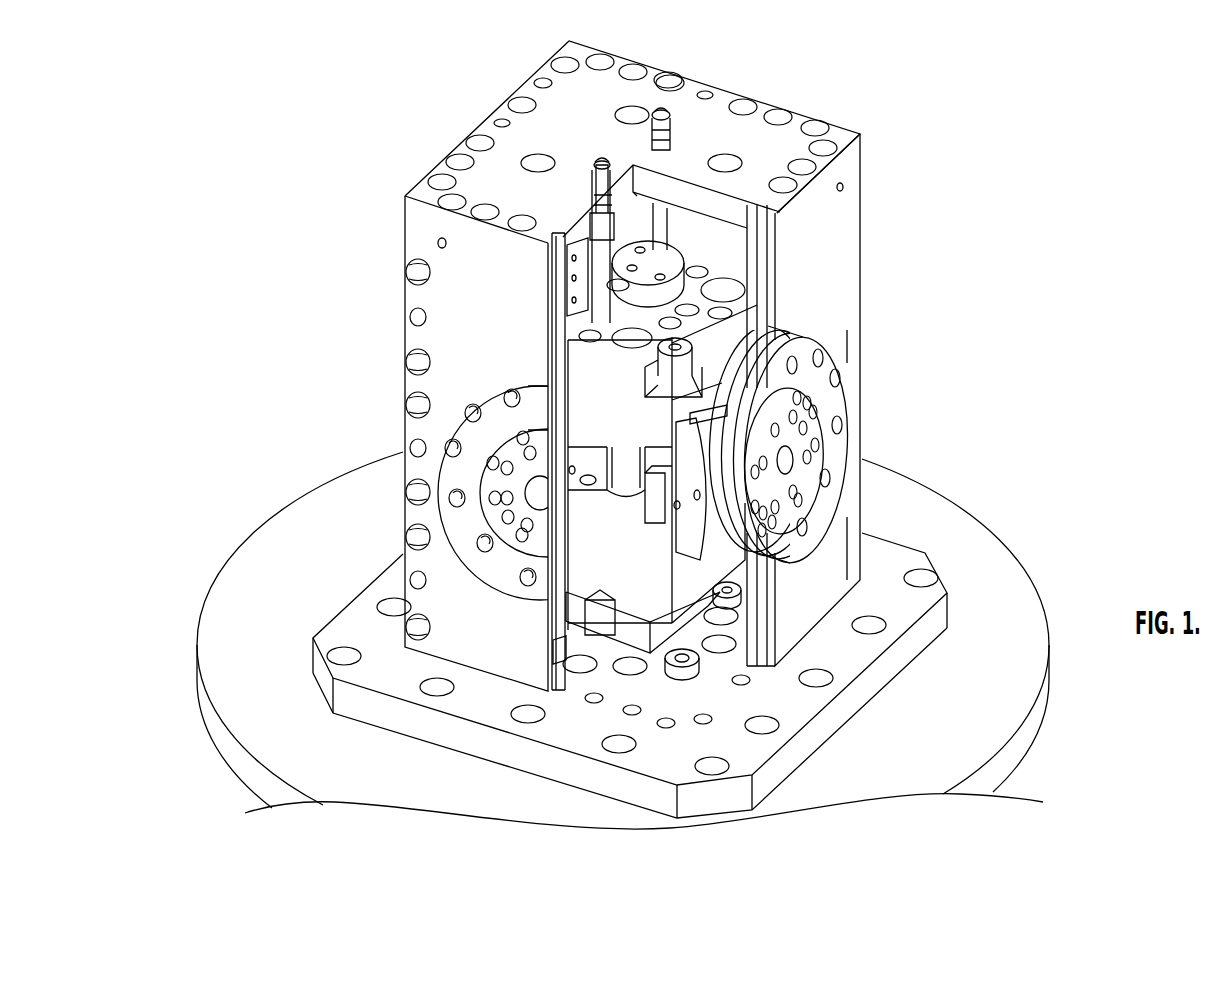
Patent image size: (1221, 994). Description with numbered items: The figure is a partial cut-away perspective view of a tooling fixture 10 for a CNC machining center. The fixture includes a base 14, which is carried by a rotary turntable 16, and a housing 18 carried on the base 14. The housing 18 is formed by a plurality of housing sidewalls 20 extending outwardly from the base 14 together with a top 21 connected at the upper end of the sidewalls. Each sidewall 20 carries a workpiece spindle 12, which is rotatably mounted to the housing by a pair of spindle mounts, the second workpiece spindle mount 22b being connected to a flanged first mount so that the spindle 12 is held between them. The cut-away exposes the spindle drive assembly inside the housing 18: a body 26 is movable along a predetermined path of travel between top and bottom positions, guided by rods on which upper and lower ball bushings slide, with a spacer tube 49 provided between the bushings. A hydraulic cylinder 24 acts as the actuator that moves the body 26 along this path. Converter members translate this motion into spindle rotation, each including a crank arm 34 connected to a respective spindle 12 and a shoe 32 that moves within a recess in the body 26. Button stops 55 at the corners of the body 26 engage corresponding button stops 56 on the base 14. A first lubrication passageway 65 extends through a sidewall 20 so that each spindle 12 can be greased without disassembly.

The tooling fixture 10 is at (882, 134).
The workpiece spindle 12 is at (525, 428).
The base 14 is at (898, 547).
The rotary turntable 16 is at (884, 470).
The housing 18 is at (862, 205).
The housing sidewall 20 is at (478, 289).
The top 21 is at (727, 100).
The second workpiece spindle mount 22b is at (475, 392).
The hydraulic cylinder 24 is at (562, 644).
The body 26 is at (695, 580).
The shoe 32 is at (653, 505).
The crank arm 34 is at (713, 412).
The spacer tube 49 is at (620, 470).
The button stop 55 is at (605, 325).
The button stop 56 is at (727, 602).
The first lubrication passageway 65 is at (556, 235).